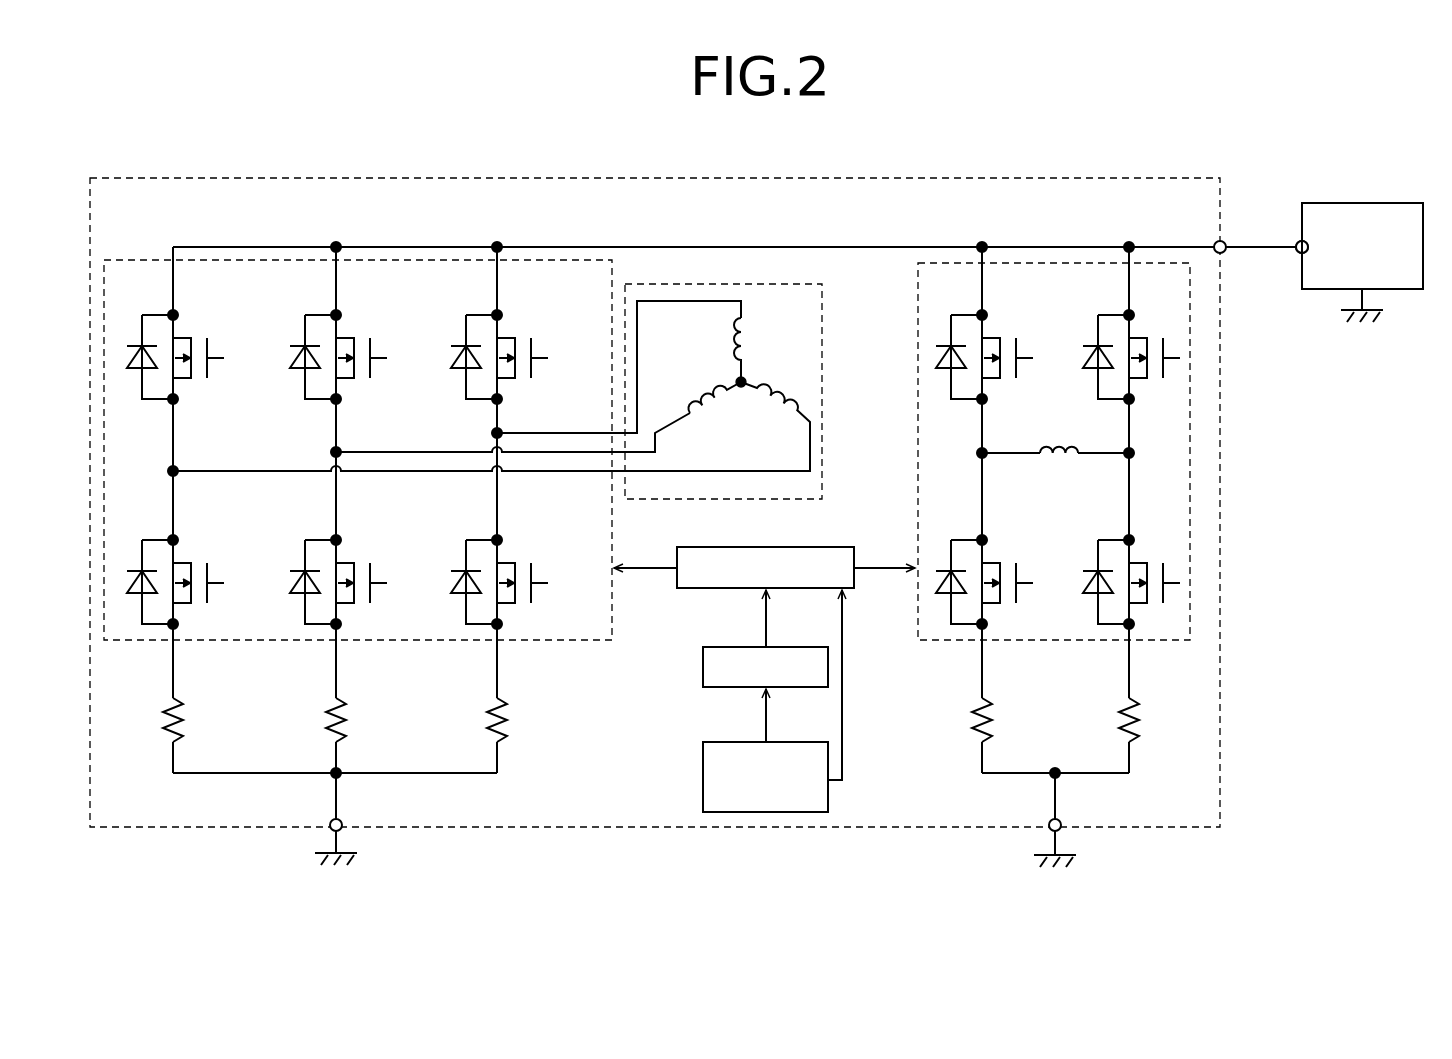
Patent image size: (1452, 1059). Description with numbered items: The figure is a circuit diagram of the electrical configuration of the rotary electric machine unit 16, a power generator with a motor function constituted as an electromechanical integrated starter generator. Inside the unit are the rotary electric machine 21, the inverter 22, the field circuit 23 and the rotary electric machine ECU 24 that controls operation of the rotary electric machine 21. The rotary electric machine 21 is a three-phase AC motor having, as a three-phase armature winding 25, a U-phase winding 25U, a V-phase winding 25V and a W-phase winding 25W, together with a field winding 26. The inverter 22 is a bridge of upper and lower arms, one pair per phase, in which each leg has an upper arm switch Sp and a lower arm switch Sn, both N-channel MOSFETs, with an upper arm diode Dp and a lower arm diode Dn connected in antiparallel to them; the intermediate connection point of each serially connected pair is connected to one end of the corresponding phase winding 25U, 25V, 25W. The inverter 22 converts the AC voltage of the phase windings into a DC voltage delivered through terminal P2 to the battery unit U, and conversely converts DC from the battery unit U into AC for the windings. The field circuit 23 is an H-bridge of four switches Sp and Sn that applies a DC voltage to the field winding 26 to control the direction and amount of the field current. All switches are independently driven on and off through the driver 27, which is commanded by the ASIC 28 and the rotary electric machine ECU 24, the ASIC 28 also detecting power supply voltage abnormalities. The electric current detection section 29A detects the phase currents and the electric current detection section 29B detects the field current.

The rotary electric machine unit 16 is at (1015, 178).
The inverter 22 is at (612, 240).
The field circuit 23 is at (1143, 241).
The rotary electric machine 21 is at (851, 391).
The three-phase armature winding 25 is at (822, 388).
The U-phase winding 25U is at (734, 346).
The V-phase winding 25V is at (770, 416).
The W-phase winding 25W is at (706, 416).
The field winding 26 is at (1040, 447).
The driver 27 is at (794, 547).
The ASIC 28 is at (796, 647).
The rotary electric machine ECU 24 is at (796, 742).
The electric current detection section 29A is at (186, 729).
The electric current detection section 29B is at (995, 729).
The power supply terminal P2 is at (1296, 246).
The battery unit U is at (1410, 203).
The upper arm diode Dp is at (332, 337).
The upper arm switch Sp is at (332, 337).
The lower arm diode Dn is at (332, 562).
The lower arm switch Sn is at (332, 562).